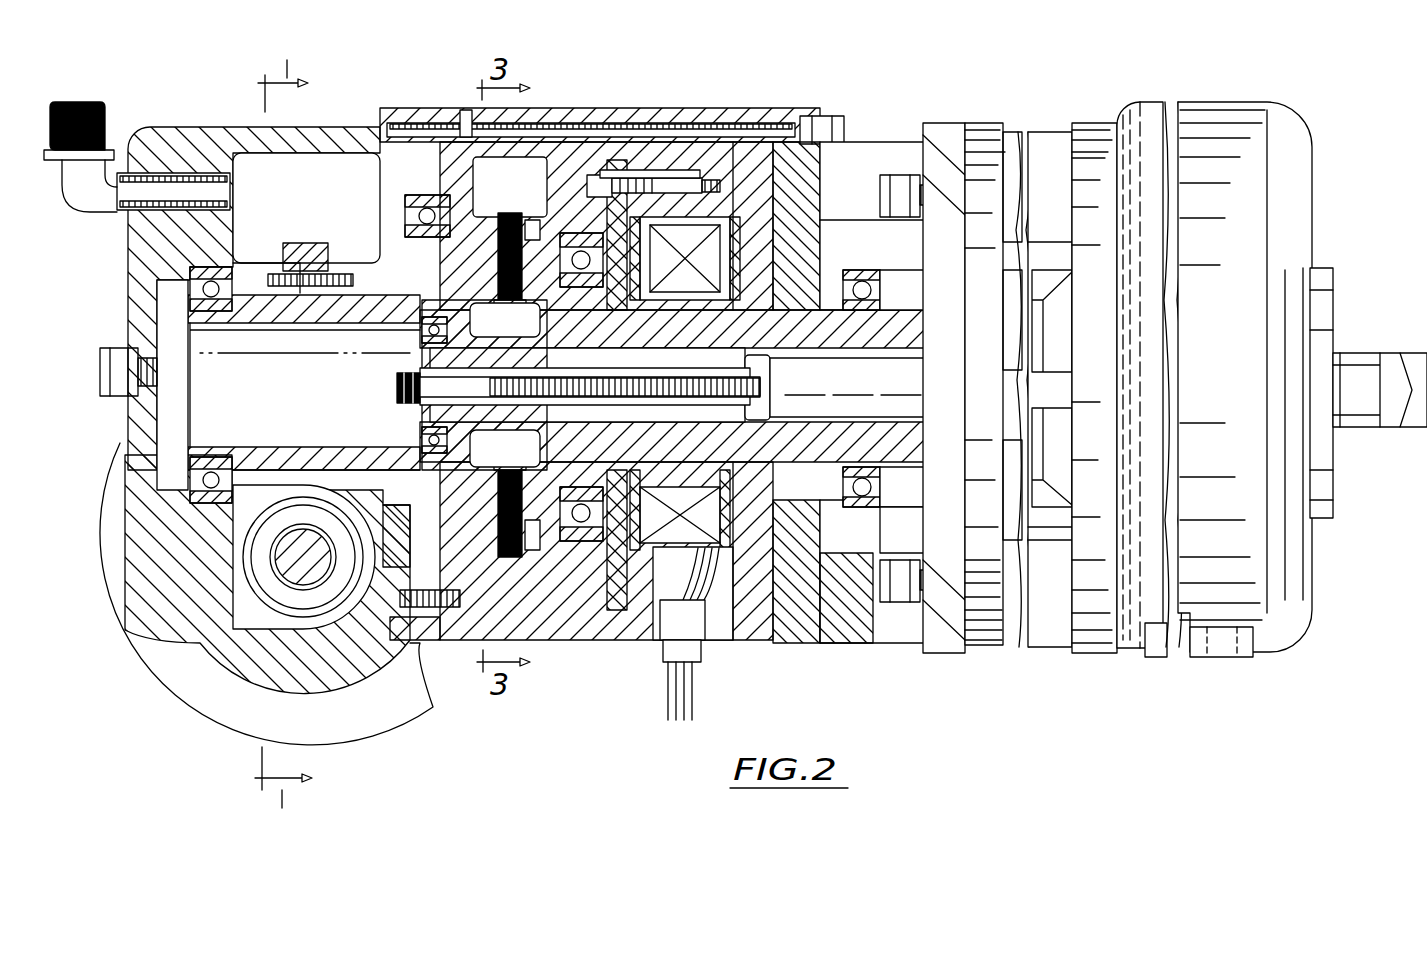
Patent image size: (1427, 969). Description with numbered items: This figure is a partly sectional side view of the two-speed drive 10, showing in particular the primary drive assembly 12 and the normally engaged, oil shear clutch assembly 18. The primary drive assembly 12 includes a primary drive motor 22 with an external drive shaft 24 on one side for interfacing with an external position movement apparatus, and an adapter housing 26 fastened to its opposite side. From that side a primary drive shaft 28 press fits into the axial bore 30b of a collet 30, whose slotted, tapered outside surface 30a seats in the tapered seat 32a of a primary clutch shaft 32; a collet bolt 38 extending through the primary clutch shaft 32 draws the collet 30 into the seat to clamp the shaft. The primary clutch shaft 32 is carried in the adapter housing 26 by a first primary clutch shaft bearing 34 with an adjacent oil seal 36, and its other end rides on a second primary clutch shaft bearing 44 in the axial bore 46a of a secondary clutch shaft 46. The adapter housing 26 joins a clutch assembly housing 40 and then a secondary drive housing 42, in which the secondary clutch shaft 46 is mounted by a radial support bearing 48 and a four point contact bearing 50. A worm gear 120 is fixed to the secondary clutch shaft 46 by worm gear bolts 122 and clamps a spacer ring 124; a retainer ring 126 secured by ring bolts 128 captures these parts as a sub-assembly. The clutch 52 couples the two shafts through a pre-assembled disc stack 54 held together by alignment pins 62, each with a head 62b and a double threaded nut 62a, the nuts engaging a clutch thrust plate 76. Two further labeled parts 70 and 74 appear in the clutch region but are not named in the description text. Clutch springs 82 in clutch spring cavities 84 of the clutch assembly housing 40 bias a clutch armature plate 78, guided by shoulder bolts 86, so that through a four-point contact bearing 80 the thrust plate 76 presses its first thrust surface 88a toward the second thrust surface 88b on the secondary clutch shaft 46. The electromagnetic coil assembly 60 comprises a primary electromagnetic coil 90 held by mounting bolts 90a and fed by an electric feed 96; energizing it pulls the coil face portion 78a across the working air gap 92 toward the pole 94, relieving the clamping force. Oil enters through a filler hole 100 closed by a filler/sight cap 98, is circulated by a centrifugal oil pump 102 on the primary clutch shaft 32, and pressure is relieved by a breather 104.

The two-speed drive 10 is at (948, 108).
The primary drive assembly 12 is at (926, 690).
The clutch assembly 18 is at (558, 683).
The primary drive motor 22 is at (1150, 648).
The external drive shaft 24 is at (1392, 352).
The adapter housing 26 is at (960, 653).
The primary drive shaft 28 is at (692, 386).
The collet 30 is at (880, 520).
The tapered outside surface 30a is at (900, 560).
The axial bore 30b is at (840, 440).
The primary clutch shaft 32 is at (878, 510).
The tapered seat 32a is at (845, 330).
The first primary clutch shaft bearing 34 is at (890, 250).
The oil seal 36 is at (915, 430).
The collet bolt 38 is at (398, 383).
The clutch assembly housing 40 is at (580, 120).
The secondary drive housing 42 is at (400, 125).
The second primary clutch shaft bearing 44 is at (440, 440).
The secondary clutch shaft 46 is at (240, 300).
The axial bore 46a is at (265, 460).
The radial support bearing 48 is at (205, 460).
The four point contact bearing 50 is at (405, 215).
The clutch 52 is at (560, 640).
The pre-assembled disc stack 54 is at (545, 168).
The electromagnetic coil assembly 60 is at (775, 145).
The alignment pins 62 is at (492, 560).
The double threaded nut 62a is at (533, 560).
The head 62b is at (410, 650).
The armature plate 70 is at (612, 215).
The lower armature plate 74 is at (632, 620).
The clutch thrust plate 76 is at (560, 260).
The clutch armature plate 78 is at (645, 150).
The coil face portion 78a is at (685, 258).
The four-point contact bearing 80 is at (550, 480).
The clutch springs 82 is at (700, 178).
The clutch spring cavities 84 is at (705, 180).
The shoulder bolts 86 is at (640, 175).
The first thrust surface 88a is at (470, 288).
The second thrust surface 88b is at (515, 215).
The primary electromagnetic coil 90 is at (830, 150).
The mounting bolts 90a is at (762, 600).
The working air gap 92 is at (640, 555).
The pole 94 is at (600, 548).
The electric feed 96 is at (665, 710).
The filler/sight cap 98 is at (108, 400).
The filler hole 100 is at (160, 340).
The centrifugal oil pump 102 is at (425, 375).
The breather 104 is at (110, 170).
The worm gear 120 is at (335, 230).
The worm gear bolts 122 is at (275, 290).
The spacer ring 124 is at (340, 190).
The retainer ring 126 is at (465, 250).
The ring bolts 128 is at (468, 120).